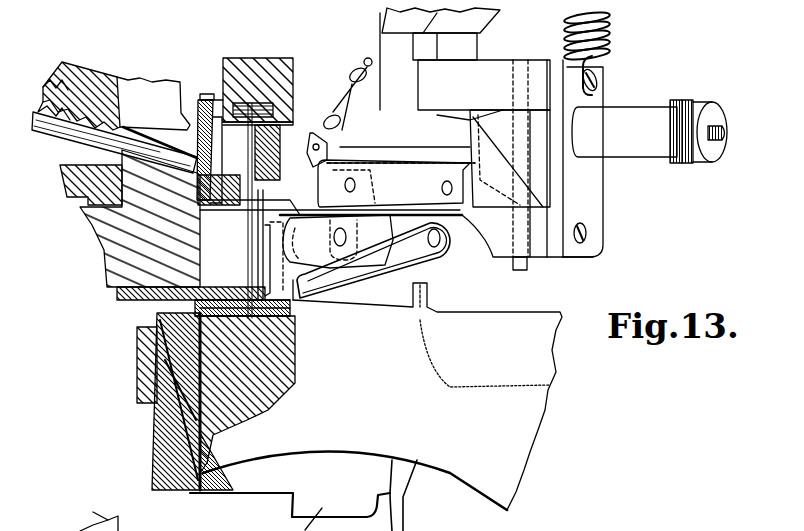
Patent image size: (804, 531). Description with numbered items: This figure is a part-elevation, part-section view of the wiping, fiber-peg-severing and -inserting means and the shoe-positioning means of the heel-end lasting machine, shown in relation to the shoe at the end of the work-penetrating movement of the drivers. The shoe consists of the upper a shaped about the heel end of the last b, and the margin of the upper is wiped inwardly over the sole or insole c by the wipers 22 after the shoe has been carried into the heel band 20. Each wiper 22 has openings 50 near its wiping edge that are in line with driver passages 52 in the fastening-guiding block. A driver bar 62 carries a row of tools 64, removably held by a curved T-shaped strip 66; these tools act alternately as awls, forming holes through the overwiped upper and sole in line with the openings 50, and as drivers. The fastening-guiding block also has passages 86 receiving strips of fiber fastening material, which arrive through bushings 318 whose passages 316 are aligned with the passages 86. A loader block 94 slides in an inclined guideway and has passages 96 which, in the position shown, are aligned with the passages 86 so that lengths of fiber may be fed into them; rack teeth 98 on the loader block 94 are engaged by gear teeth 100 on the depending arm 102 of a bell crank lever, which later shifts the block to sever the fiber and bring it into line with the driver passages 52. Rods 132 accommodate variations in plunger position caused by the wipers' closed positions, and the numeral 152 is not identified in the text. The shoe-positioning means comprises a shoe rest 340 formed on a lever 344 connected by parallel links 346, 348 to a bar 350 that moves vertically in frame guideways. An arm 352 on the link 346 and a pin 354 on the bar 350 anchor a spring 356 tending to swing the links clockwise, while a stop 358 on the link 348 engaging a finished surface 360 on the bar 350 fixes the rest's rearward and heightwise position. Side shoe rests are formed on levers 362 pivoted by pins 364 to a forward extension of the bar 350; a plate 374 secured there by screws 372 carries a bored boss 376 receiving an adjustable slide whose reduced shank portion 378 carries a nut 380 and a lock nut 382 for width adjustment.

The heel band 20 is at (172, 492).
The wipers 22 is at (116, 293).
The openings 50 is at (215, 302).
The driver passages 52 is at (268, 240).
The driver bar 62 is at (263, 70).
The tools 64 is at (268, 260).
The curved T-shaped strip 66 is at (273, 112).
The passages 86 is at (180, 134).
The loader block 94 is at (73, 140).
The passages 96 is at (180, 192).
The rack teeth 98 is at (48, 108).
The gear teeth 100 is at (52, 84).
The depending arm 102 is at (80, 66).
The rods 132 is at (100, 514).
The pin 152 is at (77, 524).
The passages 316 is at (212, 100).
The bushings 318 is at (180, 118).
The shoe rest 340 is at (283, 320).
The lever 344 is at (370, 263).
The link 346 is at (372, 218).
The link 348 is at (477, 242).
The bar 350 is at (380, 30).
The arm 352 is at (330, 152).
The pin 354 is at (372, 64).
The spring 356 is at (350, 72).
The stop 358 is at (470, 118).
The finished surface 360 is at (378, 170).
The lever 362 is at (466, 118).
The pin 364 is at (513, 80).
The screws 372 is at (598, 82).
The plate 374 is at (603, 181).
The boss 376 is at (662, 152).
The shank portion 378 is at (728, 132).
The nut 380 is at (686, 102).
The lock nut 382 is at (718, 112).
The shoe upper materials a is at (160, 404).
The last b is at (393, 470).
The sole or insole c is at (296, 330).